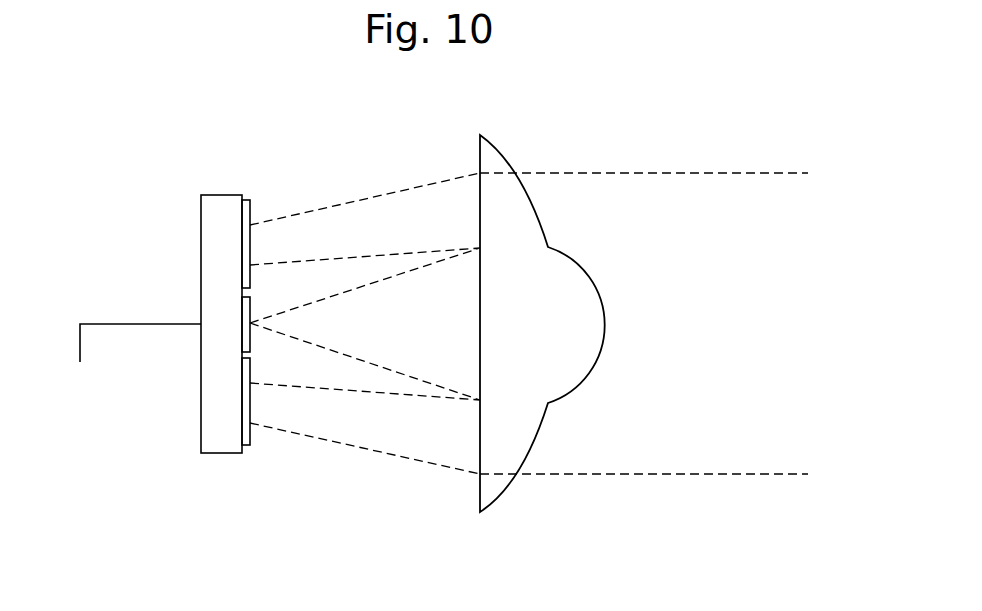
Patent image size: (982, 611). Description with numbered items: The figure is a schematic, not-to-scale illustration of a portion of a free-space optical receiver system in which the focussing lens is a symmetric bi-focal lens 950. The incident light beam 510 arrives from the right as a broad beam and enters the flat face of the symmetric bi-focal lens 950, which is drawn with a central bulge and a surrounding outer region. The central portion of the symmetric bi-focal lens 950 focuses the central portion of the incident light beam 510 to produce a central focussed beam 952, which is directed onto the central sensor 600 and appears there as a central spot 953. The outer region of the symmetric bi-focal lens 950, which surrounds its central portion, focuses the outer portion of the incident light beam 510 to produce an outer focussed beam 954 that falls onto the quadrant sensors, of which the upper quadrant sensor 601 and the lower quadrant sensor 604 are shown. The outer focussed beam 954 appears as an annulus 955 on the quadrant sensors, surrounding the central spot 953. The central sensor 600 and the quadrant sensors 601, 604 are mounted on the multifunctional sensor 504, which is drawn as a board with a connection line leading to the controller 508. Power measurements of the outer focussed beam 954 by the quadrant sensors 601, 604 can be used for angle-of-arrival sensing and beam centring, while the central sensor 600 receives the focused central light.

The multifunctional sensor 504 is at (222, 205).
The quadrant sensor 601 is at (251, 205).
The central sensor 600 is at (247, 312).
The quadrant sensor 604 is at (250, 435).
The controller 508 is at (121, 359).
The symmetric bi-focal lens 950 is at (490, 168).
The central focussed beam 952 is at (380, 313).
The central spot 953 is at (262, 323).
The outer focussed beam 954 is at (425, 213).
The annulus 955 is at (258, 242).
The incident light beam 510 is at (695, 235).